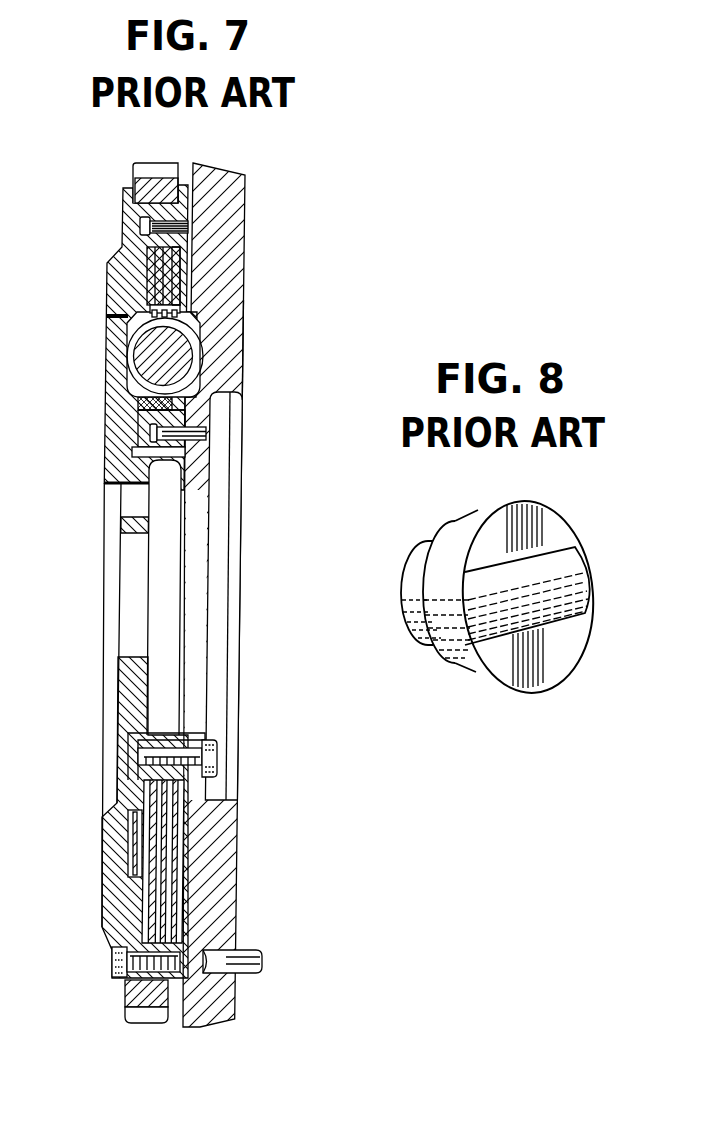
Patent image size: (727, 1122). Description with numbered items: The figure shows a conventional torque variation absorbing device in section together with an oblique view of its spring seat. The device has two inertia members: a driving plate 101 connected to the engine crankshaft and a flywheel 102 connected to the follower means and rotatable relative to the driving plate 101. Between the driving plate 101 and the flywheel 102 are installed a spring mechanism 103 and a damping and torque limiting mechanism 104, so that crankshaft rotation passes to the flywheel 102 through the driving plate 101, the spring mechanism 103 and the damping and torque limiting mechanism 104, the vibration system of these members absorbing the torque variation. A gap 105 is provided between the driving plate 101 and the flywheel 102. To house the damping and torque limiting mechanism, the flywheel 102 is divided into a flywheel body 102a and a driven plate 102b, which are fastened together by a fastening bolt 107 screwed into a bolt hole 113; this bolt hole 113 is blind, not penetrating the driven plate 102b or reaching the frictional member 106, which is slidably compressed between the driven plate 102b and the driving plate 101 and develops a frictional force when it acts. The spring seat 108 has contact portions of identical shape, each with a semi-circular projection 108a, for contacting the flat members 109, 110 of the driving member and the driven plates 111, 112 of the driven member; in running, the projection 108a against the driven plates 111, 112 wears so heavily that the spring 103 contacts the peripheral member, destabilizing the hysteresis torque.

In FIG. 7, the driving plate 101 is at (118, 279).
In FIG. 7, the flywheel 102 is at (233, 239).
In FIG. 7, the flywheel body 102a is at (228, 343).
In FIG. 7, the driven plate 102b is at (133, 426).
In FIG. 7, the spring mechanism 103 is at (128, 355).
In FIG. 7, the damping and torque limiting mechanism 104 is at (181, 288).
In FIG. 7, the gap 105 is at (246, 204).
In FIG. 7, the frictional member 106 is at (133, 452).
In FIG. 7, the fastening bolt 107 is at (207, 429).
In FIG. 7, the spring seat 108 is at (143, 370).
In FIG. 8, the spring seat 108 is at (560, 533).
In FIG. 8, the semi-circular projection 108a is at (585, 580).
In FIG. 7, the flat member 109 is at (143, 258).
In FIG. 7, the flat member 110 is at (186, 270).
In FIG. 7, the driven plate 111 is at (134, 833).
In FIG. 7, the driven plate 112 is at (181, 828).
In FIG. 7, the bolt hole 113 is at (200, 450).